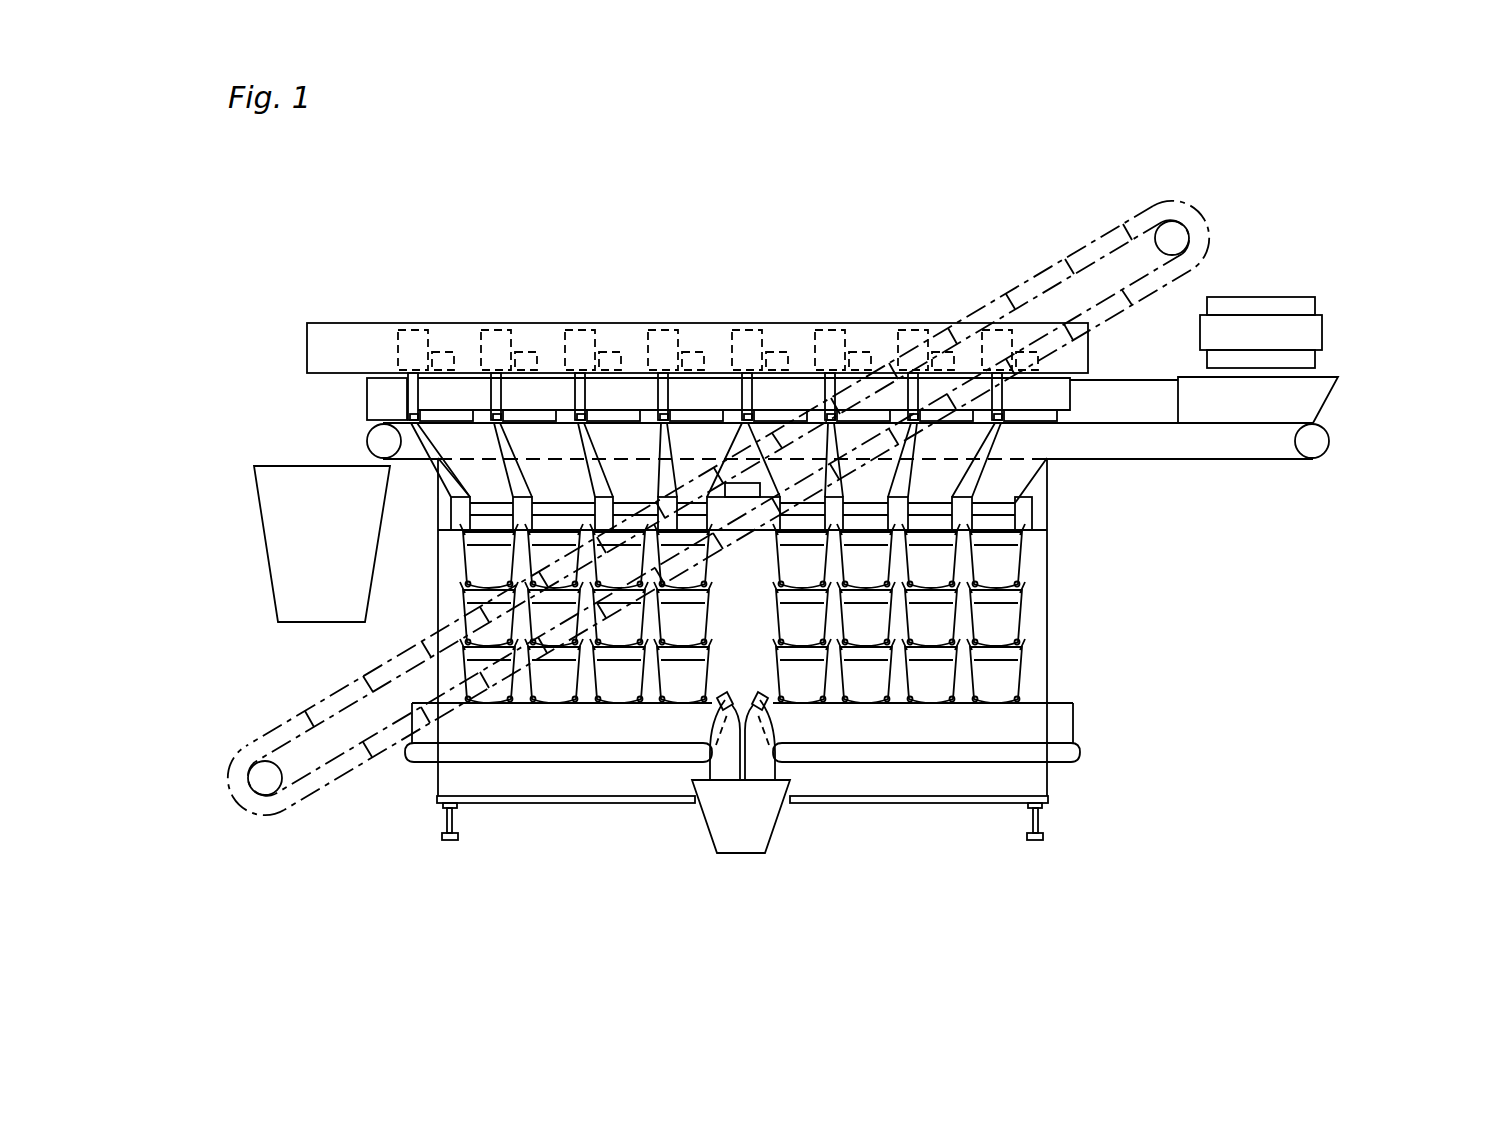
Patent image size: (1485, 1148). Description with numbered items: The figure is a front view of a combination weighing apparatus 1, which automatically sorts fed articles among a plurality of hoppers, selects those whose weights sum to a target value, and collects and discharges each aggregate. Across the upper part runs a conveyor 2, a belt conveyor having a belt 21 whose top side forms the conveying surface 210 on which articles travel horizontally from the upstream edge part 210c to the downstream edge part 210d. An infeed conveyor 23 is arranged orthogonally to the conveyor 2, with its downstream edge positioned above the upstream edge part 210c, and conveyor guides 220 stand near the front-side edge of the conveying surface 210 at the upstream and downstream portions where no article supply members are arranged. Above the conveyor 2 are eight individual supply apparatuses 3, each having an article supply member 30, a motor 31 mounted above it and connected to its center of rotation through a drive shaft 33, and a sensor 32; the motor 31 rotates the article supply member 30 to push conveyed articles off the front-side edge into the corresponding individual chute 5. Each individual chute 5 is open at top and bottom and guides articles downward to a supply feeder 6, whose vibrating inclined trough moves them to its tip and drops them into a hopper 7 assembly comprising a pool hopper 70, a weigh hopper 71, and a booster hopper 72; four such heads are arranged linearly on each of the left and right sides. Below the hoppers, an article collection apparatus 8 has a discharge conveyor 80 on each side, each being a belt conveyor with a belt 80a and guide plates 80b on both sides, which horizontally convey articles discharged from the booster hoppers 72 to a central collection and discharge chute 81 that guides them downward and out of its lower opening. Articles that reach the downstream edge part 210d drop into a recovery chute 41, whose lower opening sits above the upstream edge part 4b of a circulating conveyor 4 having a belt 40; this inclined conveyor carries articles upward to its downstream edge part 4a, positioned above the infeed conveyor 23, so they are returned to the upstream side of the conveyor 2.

The combination weighing apparatus 1 is at (1230, 725).
The conveyor 2 is at (1210, 495).
The individual supply apparatus 3 is at (440, 287).
The circulating conveyor 4 is at (727, 478).
The downstream edge part of the circulating conveyor 4a is at (1183, 193).
The upstream edge part of the circulating conveyor 4b is at (228, 762).
The individual chute 5 is at (1046, 445).
The supply feeder 6 is at (1003, 512).
The hopper 7 is at (816, 617).
The article collection apparatus 8 is at (763, 794).
The belt 21 is at (1222, 462).
The infeed conveyor 23 is at (1292, 297).
The article supply member 30 is at (443, 415).
The motor 31 is at (412, 330).
The sensor 32 is at (449, 351).
The drive shaft 33 is at (408, 391).
The belt 40 is at (1060, 275).
The recovery chute 41 is at (282, 527).
The pool hopper 70 is at (1000, 567).
The weigh hopper 71 is at (1000, 612).
The booster hopper 72 is at (790, 674).
The discharge conveyor 80 is at (740, 791).
The belt 80a is at (505, 728).
The guide plate 80b is at (598, 733).
The collection and discharge chute 81 is at (722, 823).
The conveying surface 210 is at (1123, 422).
The upstream edge part 210c is at (1333, 420).
The downstream edge part 210d is at (352, 424).
The conveyor guide 220 is at (1255, 415).